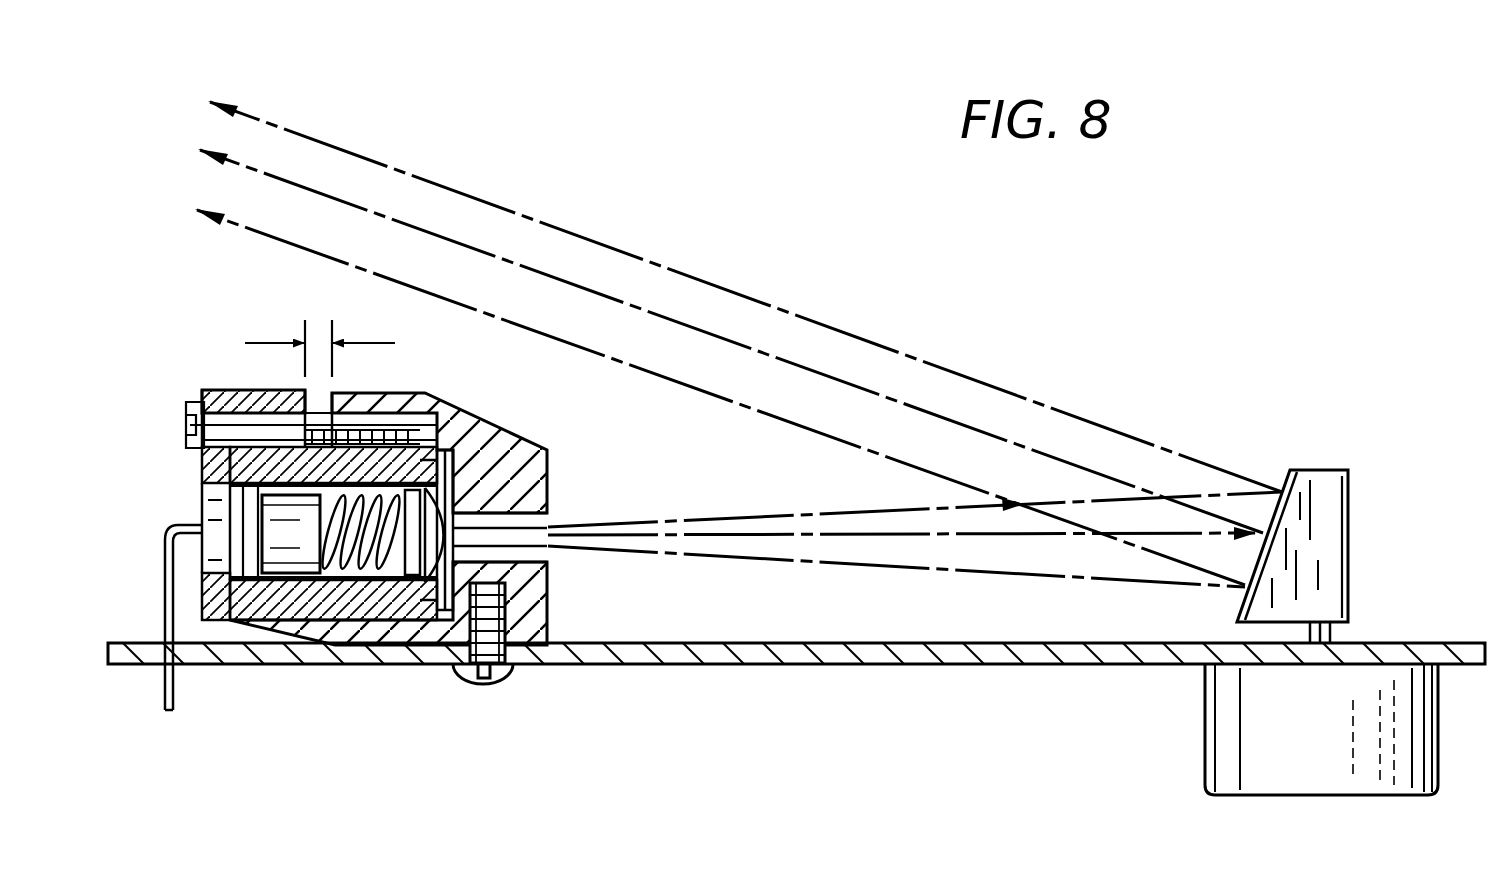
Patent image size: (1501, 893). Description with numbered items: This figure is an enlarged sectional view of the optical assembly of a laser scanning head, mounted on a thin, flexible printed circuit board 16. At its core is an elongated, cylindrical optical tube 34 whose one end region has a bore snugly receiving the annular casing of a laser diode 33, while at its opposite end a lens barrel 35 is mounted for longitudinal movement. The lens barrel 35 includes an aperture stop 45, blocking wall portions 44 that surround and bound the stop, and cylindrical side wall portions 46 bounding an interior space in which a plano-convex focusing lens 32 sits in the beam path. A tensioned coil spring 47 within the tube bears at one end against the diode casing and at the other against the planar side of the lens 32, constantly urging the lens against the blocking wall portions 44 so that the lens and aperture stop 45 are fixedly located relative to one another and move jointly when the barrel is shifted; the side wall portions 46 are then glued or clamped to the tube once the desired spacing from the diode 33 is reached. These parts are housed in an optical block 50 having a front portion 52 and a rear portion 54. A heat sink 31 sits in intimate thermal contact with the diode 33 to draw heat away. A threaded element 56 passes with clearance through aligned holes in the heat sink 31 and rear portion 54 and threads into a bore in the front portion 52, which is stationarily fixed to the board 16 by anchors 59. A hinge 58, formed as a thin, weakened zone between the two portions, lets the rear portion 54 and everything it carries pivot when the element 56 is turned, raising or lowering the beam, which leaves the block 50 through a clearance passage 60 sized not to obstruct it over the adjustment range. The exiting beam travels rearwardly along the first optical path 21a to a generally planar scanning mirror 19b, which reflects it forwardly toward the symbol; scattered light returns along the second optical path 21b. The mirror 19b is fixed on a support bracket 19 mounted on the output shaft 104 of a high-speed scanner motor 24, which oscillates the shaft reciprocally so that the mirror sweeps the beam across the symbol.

The printed circuit board 16 is at (630, 664).
The support bracket 19 is at (1352, 470).
The scanning mirror 19b is at (1296, 468).
The first optical path 21a is at (905, 538).
The second optical path 21b is at (900, 402).
The scanner motor 24 is at (1205, 728).
The heat sink 31 is at (250, 395).
The focusing lens 32 is at (468, 508).
The diode 33 is at (285, 592).
The optical tube 34 is at (395, 602).
The lens barrel 35 is at (452, 470).
The blocking wall portions 44 is at (548, 472).
The aperture stop 45 is at (470, 625).
The cylindrical side wall portions 46 is at (422, 602).
The coil spring 47 is at (372, 602).
The optical block 50 is at (556, 449).
The front portion 52 is at (545, 610).
The rear portion 54 is at (345, 398).
The threaded element 56 is at (193, 450).
The hinge 58 is at (310, 602).
The anchors 59 is at (513, 672).
The clearance passage 60 is at (548, 514).
The output shaft 104 is at (1332, 636).